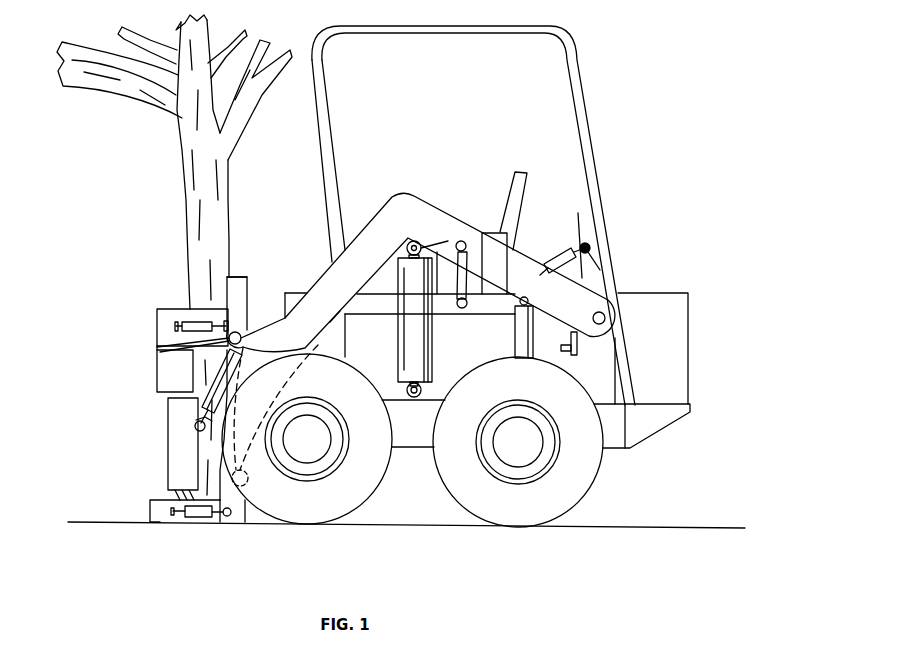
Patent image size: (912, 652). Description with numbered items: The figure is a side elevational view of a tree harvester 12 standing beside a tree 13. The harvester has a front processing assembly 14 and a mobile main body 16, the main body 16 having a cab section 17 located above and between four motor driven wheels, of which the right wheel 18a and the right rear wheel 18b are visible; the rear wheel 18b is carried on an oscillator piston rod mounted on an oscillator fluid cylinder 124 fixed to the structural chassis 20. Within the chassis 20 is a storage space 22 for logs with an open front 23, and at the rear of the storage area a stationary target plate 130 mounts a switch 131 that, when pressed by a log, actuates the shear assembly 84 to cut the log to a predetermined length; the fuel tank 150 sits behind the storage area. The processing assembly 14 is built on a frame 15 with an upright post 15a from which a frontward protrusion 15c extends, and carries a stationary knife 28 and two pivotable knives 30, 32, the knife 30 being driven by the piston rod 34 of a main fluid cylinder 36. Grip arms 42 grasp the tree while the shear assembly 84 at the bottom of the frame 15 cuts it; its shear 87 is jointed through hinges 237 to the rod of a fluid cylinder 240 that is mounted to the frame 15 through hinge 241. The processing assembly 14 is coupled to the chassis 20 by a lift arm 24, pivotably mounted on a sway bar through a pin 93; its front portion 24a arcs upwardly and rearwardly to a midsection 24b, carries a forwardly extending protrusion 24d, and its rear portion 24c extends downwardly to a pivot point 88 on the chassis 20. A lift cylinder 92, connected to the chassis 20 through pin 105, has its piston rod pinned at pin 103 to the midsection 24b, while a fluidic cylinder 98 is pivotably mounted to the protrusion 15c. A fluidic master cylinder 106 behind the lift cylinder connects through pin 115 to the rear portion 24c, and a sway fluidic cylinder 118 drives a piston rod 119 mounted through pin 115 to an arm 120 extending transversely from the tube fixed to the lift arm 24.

The tree harvester 12 is at (632, 262).
The tree 13 is at (196, 203).
The front processing assembly 14 is at (145, 336).
The frame 15 is at (245, 318).
The upright post 15a is at (240, 312).
The frontward protrusion 15c is at (210, 440).
The mobile main body 16 is at (410, 456).
The cab section 17 is at (482, 232).
The wheel 18a is at (302, 522).
The rear wheel 18b is at (527, 520).
The structural chassis 20 is at (422, 435).
The storage space 22 is at (375, 374).
The open front 23 is at (283, 330).
The lift arm 24 is at (328, 295).
The front portion 24a is at (362, 250).
The midsection 24b is at (402, 198).
The rear portion 24c is at (528, 270).
The forwardly extending protrusion 24d is at (174, 353).
The stationary knife 28 is at (232, 275).
The pivotable knife 30 is at (165, 325).
The pivotable knife 32 is at (158, 380).
The piston rod 34 is at (185, 323).
The main fluid cylinder 36 is at (207, 322).
The grip arm 42 is at (168, 439).
The shear assembly 84 is at (145, 505).
The shear 87 is at (160, 515).
The pivot point 88 is at (604, 313).
The lift cylinder 92 is at (432, 350).
The pin 93 is at (248, 483).
The fluidic cylinder 98 is at (168, 402).
The pin 103 is at (417, 243).
The pin 105 is at (421, 389).
The fluidic master cylinder 106 is at (471, 283).
The pin 115 is at (589, 248).
The sway fluidic cylinder 118 is at (559, 262).
The piston rod 119 is at (573, 236).
The arm 120 is at (593, 261).
The oscillator fluid cylinder 124 is at (515, 333).
The stationary target plate 130 is at (570, 341).
The switch 131 is at (563, 351).
The fuel tank 150 is at (680, 339).
The hinge 237 is at (174, 514).
The fluid cylinder 240 is at (197, 518).
The hinge 241 is at (231, 514).